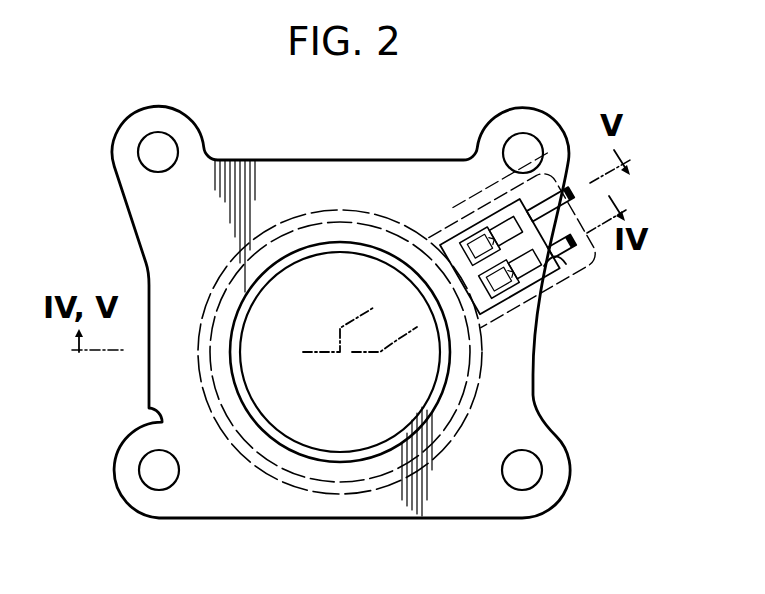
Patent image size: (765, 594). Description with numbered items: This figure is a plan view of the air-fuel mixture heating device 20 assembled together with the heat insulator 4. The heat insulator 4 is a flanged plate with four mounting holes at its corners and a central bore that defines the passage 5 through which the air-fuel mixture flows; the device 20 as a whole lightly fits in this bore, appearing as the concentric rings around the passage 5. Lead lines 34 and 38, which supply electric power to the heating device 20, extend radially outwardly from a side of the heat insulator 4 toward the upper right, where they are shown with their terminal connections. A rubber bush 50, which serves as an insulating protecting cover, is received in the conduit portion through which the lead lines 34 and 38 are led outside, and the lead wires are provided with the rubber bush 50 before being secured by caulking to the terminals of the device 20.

The heat insulator 4 is at (137, 194).
The air-fuel mixture heating device 20 is at (233, 390).
The passage 5 is at (358, 410).
The lead line 38 is at (574, 187).
The lead line 34 is at (579, 252).
The rubber bush 50 is at (560, 267).